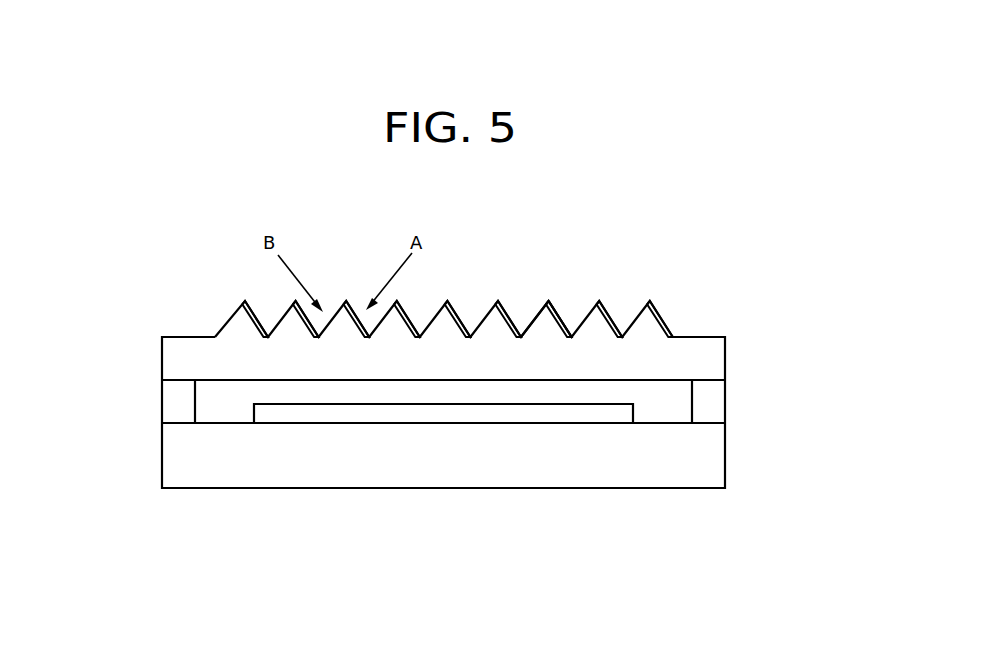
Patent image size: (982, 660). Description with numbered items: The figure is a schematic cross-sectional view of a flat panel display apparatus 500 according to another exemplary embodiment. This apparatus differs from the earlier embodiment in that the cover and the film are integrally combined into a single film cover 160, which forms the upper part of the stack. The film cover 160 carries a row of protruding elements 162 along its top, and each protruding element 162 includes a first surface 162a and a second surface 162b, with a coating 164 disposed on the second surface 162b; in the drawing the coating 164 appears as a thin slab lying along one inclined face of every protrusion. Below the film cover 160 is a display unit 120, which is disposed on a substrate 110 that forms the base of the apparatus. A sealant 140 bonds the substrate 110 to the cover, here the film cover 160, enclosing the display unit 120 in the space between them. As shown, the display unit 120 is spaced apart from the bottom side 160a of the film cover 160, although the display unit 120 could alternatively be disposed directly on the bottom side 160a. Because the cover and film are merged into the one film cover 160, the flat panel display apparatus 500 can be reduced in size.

The substrate 110 is at (721, 458).
The display unit 120 is at (447, 412).
The sealant 140 is at (721, 402).
The film cover 160 is at (721, 359).
The bottom side of the film cover 160a is at (217, 383).
The protruding element 162 is at (450, 318).
The first surface 162a is at (538, 313).
The second surface 162b is at (560, 313).
The coating 164 is at (615, 313).
The flat panel display apparatus 500 is at (613, 568).